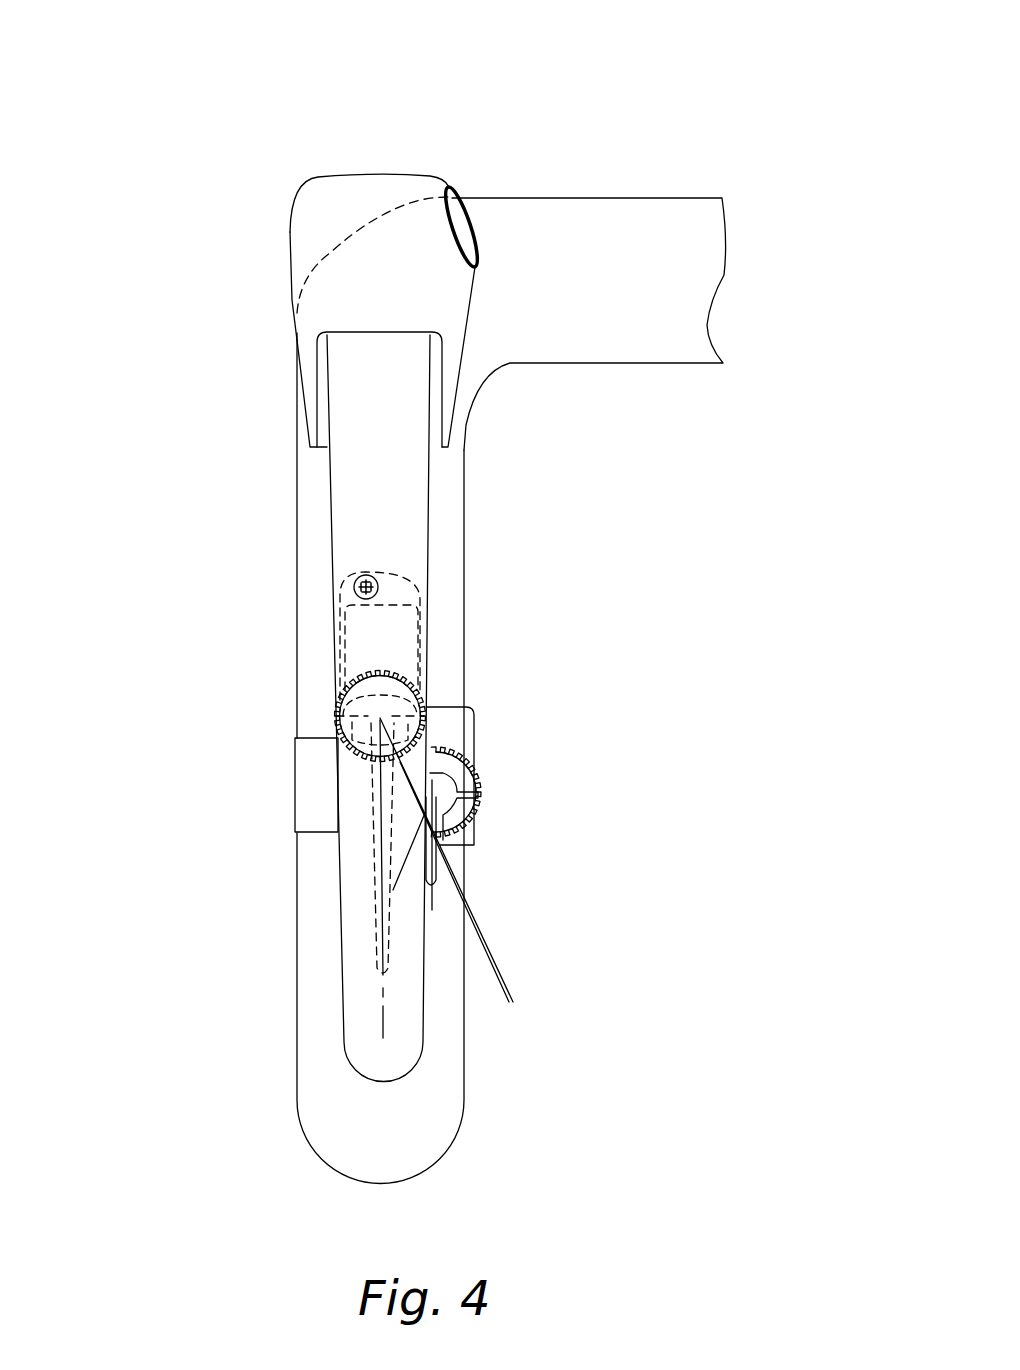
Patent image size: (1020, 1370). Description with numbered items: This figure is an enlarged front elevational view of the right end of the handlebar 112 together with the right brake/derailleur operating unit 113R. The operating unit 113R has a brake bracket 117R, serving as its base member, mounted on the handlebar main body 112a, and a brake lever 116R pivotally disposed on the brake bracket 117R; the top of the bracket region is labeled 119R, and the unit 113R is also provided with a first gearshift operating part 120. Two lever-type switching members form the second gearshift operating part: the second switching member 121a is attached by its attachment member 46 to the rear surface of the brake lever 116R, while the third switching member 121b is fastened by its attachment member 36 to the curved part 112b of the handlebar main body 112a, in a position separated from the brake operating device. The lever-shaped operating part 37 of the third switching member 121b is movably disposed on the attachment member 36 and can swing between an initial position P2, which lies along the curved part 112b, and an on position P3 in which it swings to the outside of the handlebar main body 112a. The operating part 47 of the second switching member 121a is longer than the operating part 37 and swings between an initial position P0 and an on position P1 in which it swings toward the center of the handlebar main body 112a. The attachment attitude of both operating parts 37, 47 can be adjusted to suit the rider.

The handlebar 112 is at (532, 592).
The handlebar main body 112a is at (678, 197).
The curved part 112b is at (450, 480).
The brake/derailleur operating unit 113R is at (298, 493).
The brake lever 116R is at (357, 520).
The brake bracket 117R is at (368, 233).
The cap top portion 119R is at (378, 175).
The first gearshift operating part 120 is at (473, 200).
The attachment member 46 is at (440, 620).
The second switching member 121a is at (430, 680).
The third switching member 121b is at (476, 745).
The attachment member 36 is at (474, 718).
The lever-shaped operating part 37 is at (402, 867).
The operating part 47 is at (415, 939).
The initial position P0 is at (383, 1017).
The on position P1 is at (384, 1007).
The initial position P2 is at (462, 858).
The on position P3 is at (393, 892).